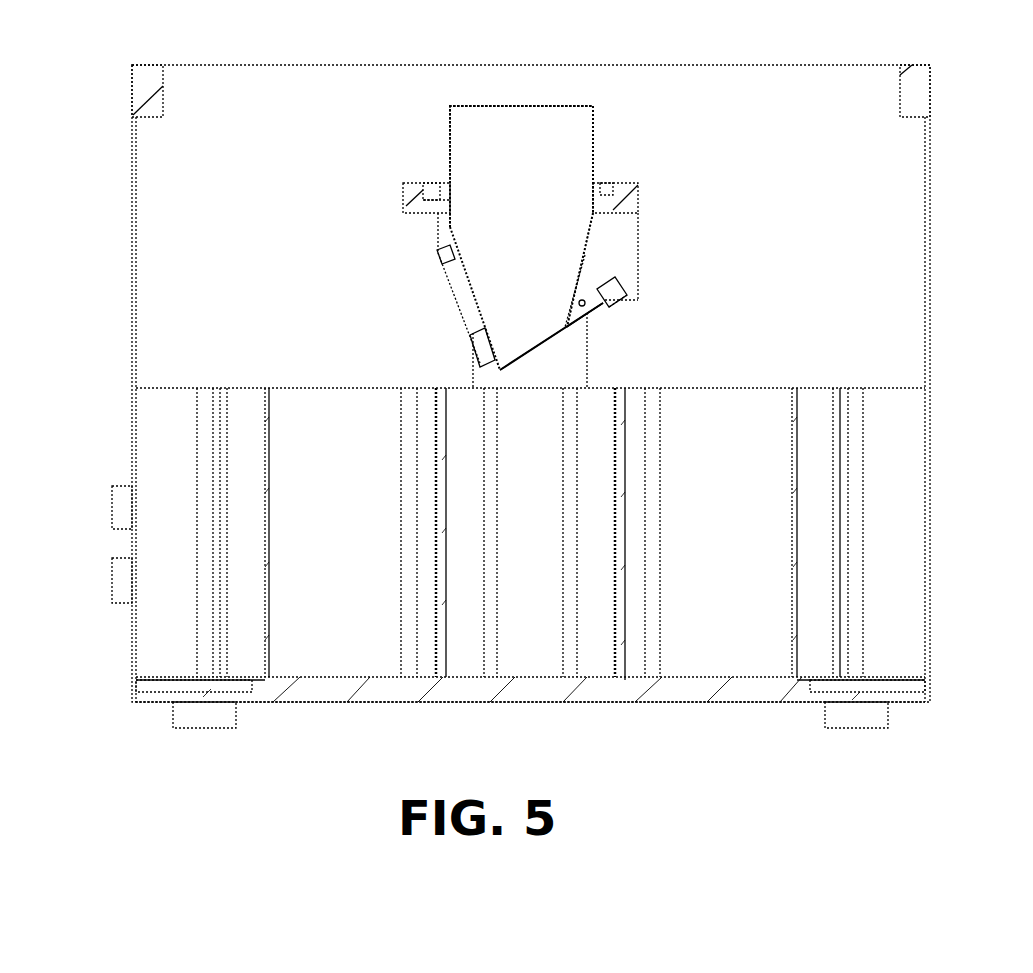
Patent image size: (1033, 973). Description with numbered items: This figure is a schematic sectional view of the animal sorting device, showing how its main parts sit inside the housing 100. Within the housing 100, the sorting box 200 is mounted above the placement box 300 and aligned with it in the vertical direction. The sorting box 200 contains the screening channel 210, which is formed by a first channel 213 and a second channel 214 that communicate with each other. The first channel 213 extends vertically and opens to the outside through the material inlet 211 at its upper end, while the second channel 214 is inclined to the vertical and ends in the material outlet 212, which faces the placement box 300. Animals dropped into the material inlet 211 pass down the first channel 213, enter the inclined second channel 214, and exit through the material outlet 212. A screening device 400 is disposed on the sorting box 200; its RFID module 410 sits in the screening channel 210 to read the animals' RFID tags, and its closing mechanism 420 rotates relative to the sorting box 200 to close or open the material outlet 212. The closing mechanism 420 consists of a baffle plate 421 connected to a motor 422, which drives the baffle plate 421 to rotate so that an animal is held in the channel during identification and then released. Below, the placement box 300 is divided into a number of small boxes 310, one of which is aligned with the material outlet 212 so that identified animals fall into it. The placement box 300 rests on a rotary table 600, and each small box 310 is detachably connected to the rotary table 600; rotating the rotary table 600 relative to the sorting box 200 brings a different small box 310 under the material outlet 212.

The housing 100 is at (133, 292).
The sorting box 200 is at (450, 157).
The screening channel 210 is at (486, 143).
The material inlet 211 is at (535, 143).
The material outlet 212 is at (543, 343).
The first channel 213 is at (588, 143).
The second channel 214 is at (548, 278).
The placement box 300 is at (715, 650).
The small box 310 is at (347, 647).
The screening device 400 is at (470, 305).
The RFID module 410 is at (482, 333).
The closing mechanism 420 is at (620, 290).
The baffle plate 421 is at (588, 322).
The motor 422 is at (628, 307).
The rotary table 600 is at (523, 690).